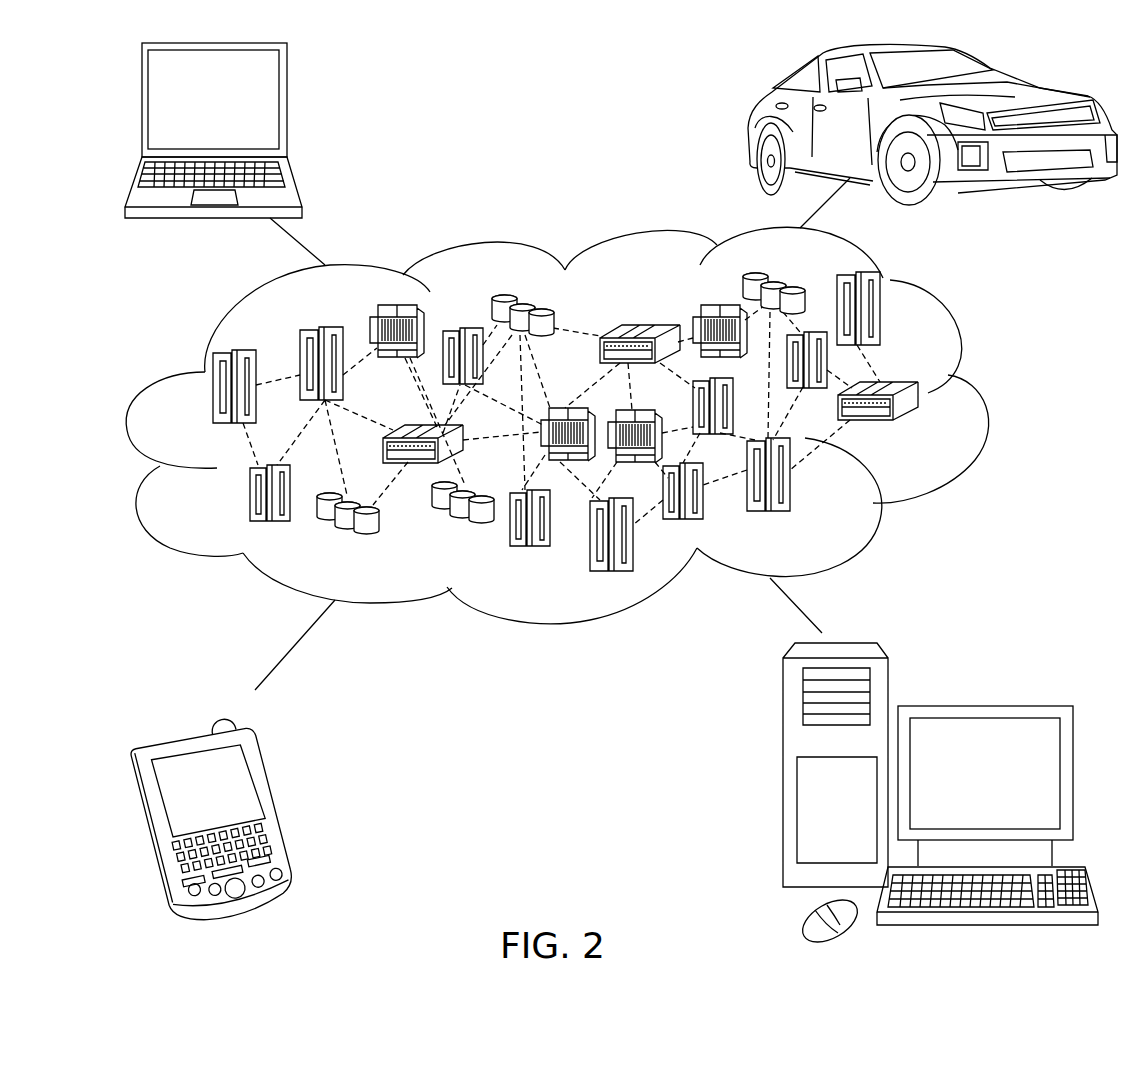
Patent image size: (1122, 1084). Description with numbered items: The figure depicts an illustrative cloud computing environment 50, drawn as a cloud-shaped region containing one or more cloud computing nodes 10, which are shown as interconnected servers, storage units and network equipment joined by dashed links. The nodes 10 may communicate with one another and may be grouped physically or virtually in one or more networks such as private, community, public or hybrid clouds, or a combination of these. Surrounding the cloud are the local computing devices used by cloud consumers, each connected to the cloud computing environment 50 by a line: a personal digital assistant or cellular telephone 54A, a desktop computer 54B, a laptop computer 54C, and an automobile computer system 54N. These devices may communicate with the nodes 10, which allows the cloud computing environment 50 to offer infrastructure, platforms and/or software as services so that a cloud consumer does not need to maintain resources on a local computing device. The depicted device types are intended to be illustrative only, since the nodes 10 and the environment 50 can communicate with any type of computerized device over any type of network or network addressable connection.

The cloud computing node 10 is at (920, 433).
The cloud computing environment 50 is at (983, 400).
The personal digital assistant (PDA) or cellular telephone 54A is at (277, 805).
The desktop computer 54B is at (982, 705).
The laptop computer 54C is at (287, 108).
The automobile computer system 54N is at (750, 123).